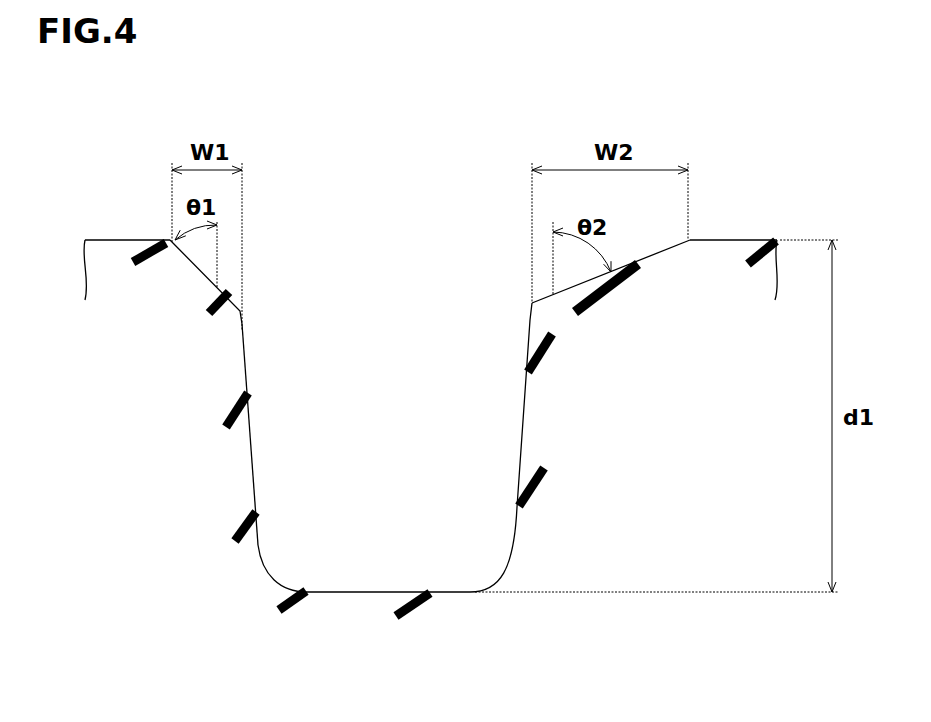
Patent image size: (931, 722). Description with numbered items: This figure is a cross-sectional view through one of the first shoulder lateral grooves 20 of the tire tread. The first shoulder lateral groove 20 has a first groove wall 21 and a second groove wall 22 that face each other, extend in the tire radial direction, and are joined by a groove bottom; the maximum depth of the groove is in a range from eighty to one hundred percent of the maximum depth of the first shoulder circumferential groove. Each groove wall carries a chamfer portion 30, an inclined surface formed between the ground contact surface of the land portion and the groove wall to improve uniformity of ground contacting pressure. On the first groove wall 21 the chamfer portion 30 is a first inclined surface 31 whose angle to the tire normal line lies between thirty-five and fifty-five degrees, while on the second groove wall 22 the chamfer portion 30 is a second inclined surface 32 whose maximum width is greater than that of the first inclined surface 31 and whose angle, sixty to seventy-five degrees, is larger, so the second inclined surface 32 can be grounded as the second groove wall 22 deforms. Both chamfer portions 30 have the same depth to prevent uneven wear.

The first shoulder lateral groove 20 is at (343, 386).
The first groove wall 21 is at (247, 372).
The second groove wall 22 is at (527, 372).
The chamfer portion 30 is at (662, 250).
The first inclined surface 31 is at (225, 297).
The second inclined surface 32 is at (633, 268).